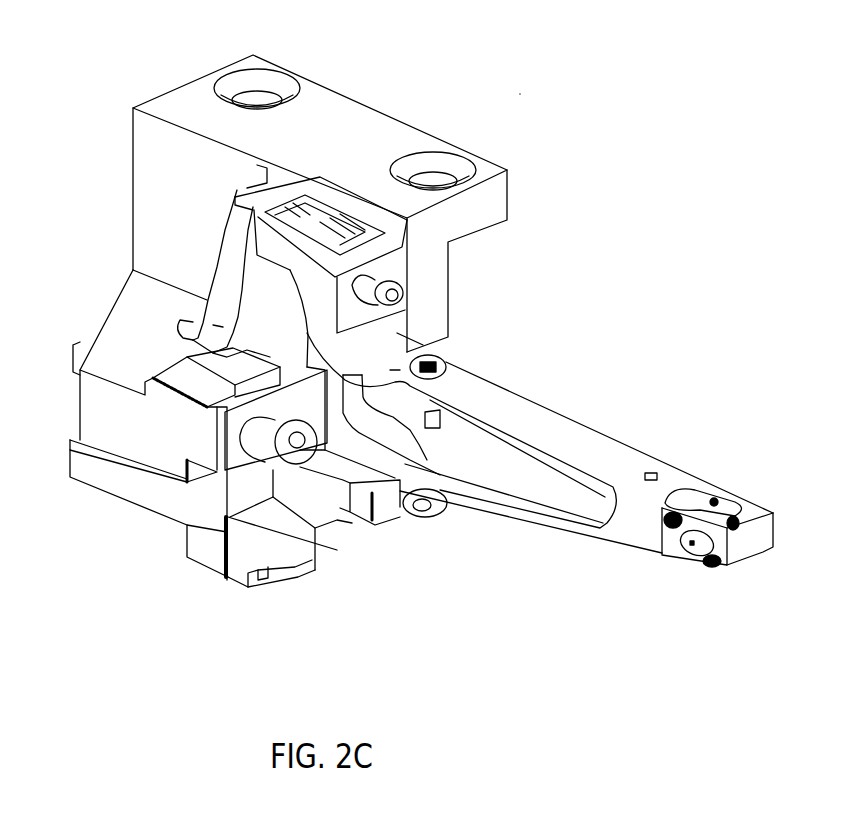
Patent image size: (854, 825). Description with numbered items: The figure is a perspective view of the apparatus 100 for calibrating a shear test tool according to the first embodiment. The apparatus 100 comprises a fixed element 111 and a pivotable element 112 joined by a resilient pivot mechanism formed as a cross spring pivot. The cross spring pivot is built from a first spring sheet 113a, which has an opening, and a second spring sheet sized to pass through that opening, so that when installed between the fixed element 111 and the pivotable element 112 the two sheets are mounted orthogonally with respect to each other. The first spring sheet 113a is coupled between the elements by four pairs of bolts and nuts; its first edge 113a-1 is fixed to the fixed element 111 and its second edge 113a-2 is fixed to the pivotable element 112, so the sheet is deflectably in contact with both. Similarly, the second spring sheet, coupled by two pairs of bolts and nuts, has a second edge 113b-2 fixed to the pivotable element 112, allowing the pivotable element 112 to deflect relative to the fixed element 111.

The apparatus 100 is at (523, 88).
The fixed element 111 is at (148, 207).
The pivotable element 112 is at (573, 433).
The first spring sheet 113a is at (247, 483).
The first edge 113a-1 is at (267, 397).
The second edge 113a-2 is at (263, 580).
The second edge 113b-2 is at (403, 508).